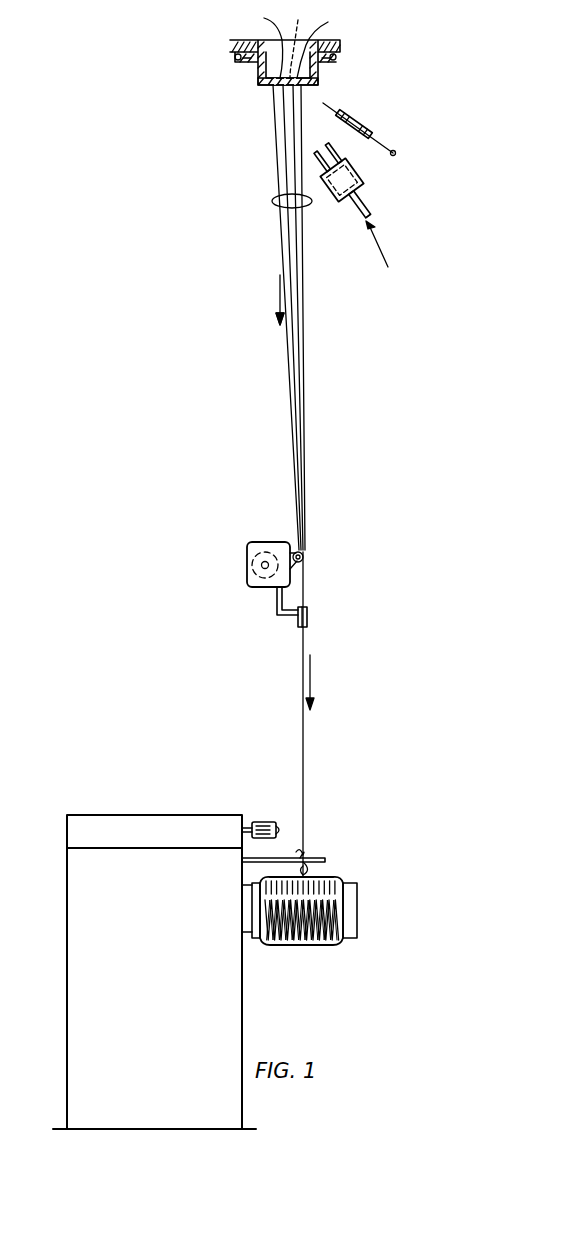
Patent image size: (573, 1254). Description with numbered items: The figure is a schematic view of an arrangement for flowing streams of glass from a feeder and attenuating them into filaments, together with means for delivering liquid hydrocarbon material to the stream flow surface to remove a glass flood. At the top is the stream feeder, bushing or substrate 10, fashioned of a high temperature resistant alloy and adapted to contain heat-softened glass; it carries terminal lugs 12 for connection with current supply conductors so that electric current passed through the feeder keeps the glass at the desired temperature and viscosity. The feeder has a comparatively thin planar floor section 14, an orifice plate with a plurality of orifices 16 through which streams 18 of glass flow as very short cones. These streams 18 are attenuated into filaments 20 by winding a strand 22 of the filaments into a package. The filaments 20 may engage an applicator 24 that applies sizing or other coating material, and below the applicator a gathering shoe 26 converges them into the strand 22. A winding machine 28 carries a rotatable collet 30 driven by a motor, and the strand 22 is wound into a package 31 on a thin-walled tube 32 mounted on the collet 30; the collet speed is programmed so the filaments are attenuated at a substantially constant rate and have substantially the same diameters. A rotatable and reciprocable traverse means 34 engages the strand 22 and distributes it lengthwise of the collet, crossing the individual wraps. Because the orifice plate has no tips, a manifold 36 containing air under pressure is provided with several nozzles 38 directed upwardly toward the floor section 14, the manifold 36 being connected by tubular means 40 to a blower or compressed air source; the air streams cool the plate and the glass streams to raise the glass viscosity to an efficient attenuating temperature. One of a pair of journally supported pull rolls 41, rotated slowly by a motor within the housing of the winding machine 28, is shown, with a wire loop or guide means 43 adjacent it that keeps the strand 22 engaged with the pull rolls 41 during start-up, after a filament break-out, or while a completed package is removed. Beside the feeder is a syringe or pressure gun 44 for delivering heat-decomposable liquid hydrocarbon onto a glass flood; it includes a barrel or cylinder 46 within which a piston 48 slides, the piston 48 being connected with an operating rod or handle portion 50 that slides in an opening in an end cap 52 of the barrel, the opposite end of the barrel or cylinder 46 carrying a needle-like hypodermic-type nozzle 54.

The stream feeder, bushing or substrate 10 is at (250, 86).
The terminal lugs 12 is at (298, 39).
The floor section 14 is at (260, 42).
The orifices 16 is at (326, 43).
The streams of glass 18 is at (272, 83).
The filaments 20 is at (272, 201).
The strand 22 is at (301, 657).
The applicator 24 is at (298, 552).
The gathering shoe 26 is at (296, 618).
The winding machine 28 is at (147, 815).
The collet 30 is at (356, 907).
The package 31 is at (305, 945).
The thin-walled tube 32 is at (343, 883).
The traverse means 34 is at (305, 860).
The manifold 36 is at (366, 181).
The nozzles 38 is at (335, 147).
The tubular means 40 is at (362, 207).
The pull rolls 41 is at (270, 823).
The wire loop or guide means 43 is at (256, 820).
The syringe or pressure gun 44 is at (378, 128).
The barrel or cylinder 46 is at (355, 120).
The piston 48 is at (373, 116).
The operating rod or handle portion 50 is at (396, 153).
The end cap 52 is at (376, 133).
The hypodermic-type nozzle 54 is at (338, 112).